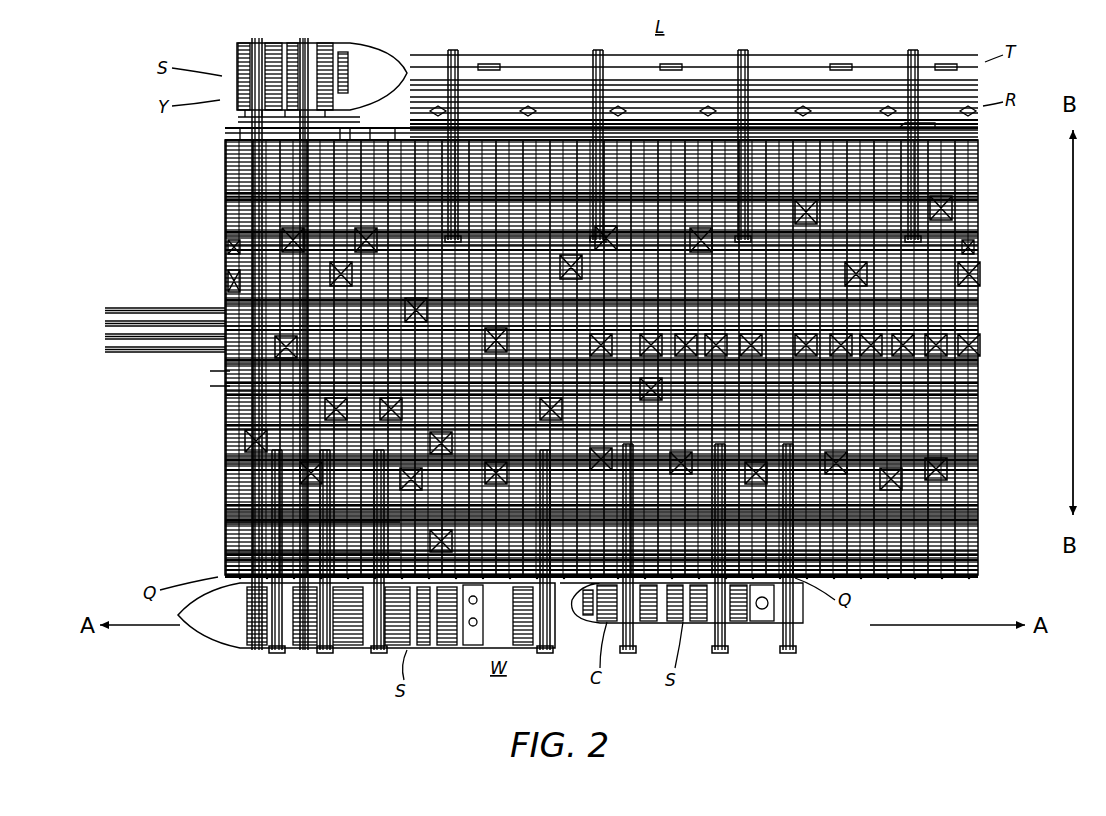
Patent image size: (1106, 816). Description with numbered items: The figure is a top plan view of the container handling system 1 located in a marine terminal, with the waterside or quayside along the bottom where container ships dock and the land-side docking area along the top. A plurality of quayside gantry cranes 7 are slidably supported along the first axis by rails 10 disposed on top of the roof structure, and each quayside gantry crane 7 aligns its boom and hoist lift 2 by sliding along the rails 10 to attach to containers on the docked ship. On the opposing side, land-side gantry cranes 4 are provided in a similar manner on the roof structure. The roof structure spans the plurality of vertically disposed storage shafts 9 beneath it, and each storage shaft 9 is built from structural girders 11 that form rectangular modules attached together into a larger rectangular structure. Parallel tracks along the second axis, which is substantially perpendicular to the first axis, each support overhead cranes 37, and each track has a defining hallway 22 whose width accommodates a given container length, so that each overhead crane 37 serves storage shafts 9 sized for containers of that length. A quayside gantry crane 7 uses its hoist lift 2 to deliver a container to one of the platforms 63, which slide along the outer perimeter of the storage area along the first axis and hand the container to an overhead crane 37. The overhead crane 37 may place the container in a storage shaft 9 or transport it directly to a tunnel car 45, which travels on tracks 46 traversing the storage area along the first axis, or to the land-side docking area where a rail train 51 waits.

The system 1 is at (88, 133).
The hoist lift 2 is at (788, 630).
The land-side gantry crane 4 is at (453, 50).
The quayside gantry crane 7 is at (278, 654).
The storage shaft 9 is at (985, 474).
The rail 10 is at (226, 143).
The structural girder 11 is at (225, 531).
The hallway 22 is at (985, 384).
The overhead crane 37 is at (220, 287).
The tunnel car 45 is at (228, 251).
The track 46 is at (985, 248).
The rail train 51 is at (215, 352).
The platform 63 is at (940, 128).